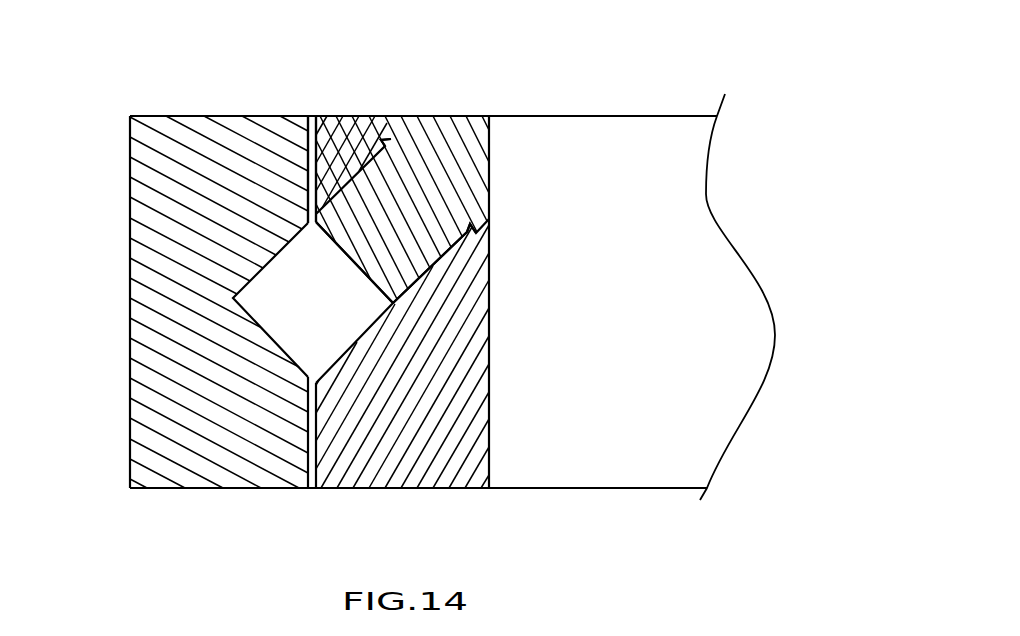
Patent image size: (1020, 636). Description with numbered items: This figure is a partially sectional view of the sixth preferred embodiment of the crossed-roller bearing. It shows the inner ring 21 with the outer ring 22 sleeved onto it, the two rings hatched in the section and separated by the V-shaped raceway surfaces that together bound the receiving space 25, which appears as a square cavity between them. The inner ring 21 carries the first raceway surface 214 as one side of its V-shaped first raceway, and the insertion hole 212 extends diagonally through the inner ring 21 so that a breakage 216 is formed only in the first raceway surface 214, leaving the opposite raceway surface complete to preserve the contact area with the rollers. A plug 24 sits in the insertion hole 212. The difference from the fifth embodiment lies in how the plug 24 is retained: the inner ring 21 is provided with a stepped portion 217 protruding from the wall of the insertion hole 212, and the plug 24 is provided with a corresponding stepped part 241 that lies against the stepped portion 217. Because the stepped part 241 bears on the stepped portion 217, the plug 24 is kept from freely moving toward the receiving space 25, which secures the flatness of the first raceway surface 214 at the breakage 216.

The inner ring 21 is at (365, 115).
The outer ring 22 is at (178, 115).
The plug 24 is at (428, 117).
The receiving space 25 is at (287, 320).
The insertion hole 212 is at (311, 114).
The first raceway surface 214 is at (366, 278).
The breakage 216 is at (468, 114).
The stepped portion 217 is at (382, 143).
The stepped part 241 is at (352, 262).